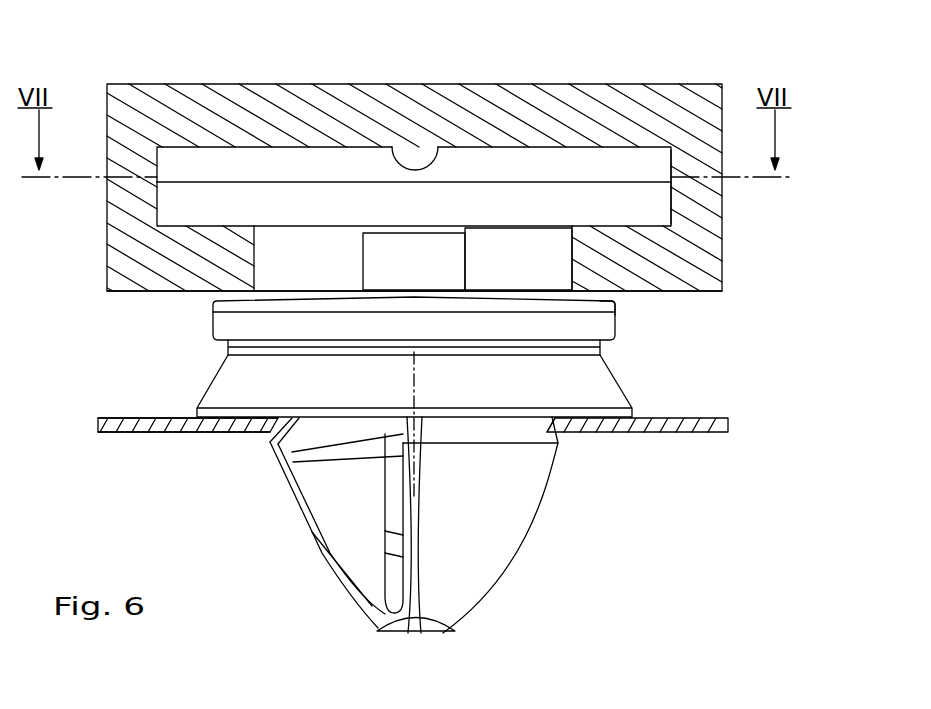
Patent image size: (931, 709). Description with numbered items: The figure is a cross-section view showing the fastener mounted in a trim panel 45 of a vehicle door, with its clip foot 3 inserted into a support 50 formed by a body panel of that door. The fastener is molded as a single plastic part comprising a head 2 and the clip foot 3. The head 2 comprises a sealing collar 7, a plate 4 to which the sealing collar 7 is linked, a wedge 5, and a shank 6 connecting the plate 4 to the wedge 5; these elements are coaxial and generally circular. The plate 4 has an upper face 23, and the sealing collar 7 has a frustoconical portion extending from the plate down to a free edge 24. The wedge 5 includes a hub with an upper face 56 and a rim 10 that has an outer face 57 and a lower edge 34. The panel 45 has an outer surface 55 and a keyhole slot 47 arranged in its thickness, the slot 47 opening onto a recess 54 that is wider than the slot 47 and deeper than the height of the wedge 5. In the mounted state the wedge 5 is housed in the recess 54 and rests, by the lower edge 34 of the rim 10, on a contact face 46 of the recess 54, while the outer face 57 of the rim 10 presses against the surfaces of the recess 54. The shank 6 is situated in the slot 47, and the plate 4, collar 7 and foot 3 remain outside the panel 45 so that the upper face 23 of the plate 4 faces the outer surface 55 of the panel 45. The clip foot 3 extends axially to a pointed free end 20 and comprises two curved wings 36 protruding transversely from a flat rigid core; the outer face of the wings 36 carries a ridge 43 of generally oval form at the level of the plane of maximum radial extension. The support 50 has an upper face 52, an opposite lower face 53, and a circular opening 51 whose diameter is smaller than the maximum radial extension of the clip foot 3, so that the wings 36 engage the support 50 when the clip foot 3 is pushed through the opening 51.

The head 2 is at (212, 346).
The clip foot 3 is at (530, 520).
The plate 4 is at (222, 302).
The wedge 5 is at (178, 182).
The shank 6 is at (418, 270).
The sealing collar 7 is at (614, 378).
The rim 10 is at (603, 217).
The pointed free end 20 is at (408, 636).
The upper face 23 is at (612, 302).
The free edge 24 is at (622, 432).
The lower edge 34 is at (672, 237).
The curved wings 36 is at (307, 532).
The ridge 43 is at (557, 440).
The panel 45 is at (626, 104).
The contact face 46 is at (172, 226).
The keyhole slot 47 is at (535, 270).
The support 50 is at (98, 427).
The opening 51 is at (281, 417).
The upper face 52 is at (122, 418).
The lower face 53 is at (130, 433).
The recess 54 is at (291, 171).
The outer surface 55 is at (695, 292).
The upper face 56 is at (484, 182).
The outer face 57 is at (673, 202).